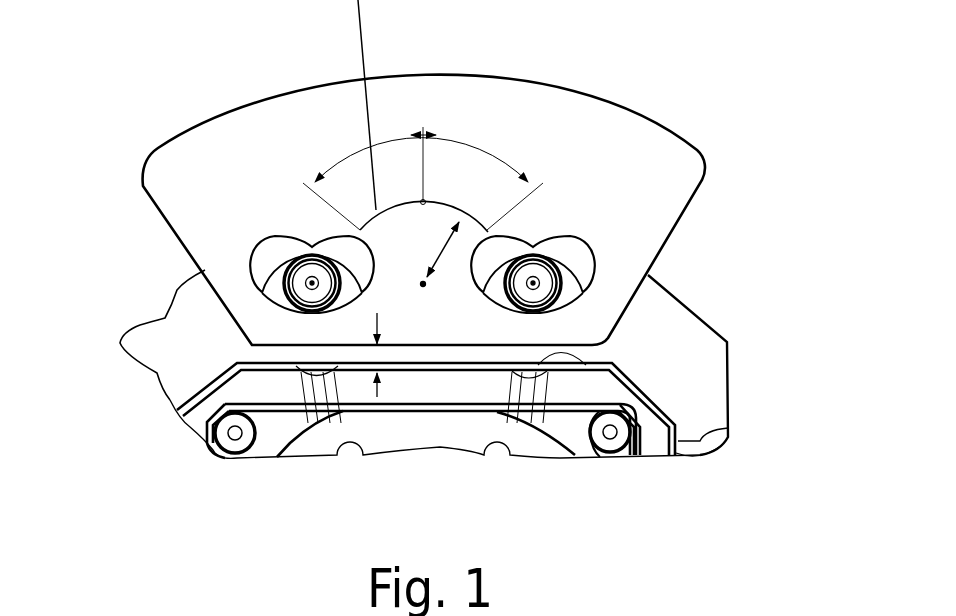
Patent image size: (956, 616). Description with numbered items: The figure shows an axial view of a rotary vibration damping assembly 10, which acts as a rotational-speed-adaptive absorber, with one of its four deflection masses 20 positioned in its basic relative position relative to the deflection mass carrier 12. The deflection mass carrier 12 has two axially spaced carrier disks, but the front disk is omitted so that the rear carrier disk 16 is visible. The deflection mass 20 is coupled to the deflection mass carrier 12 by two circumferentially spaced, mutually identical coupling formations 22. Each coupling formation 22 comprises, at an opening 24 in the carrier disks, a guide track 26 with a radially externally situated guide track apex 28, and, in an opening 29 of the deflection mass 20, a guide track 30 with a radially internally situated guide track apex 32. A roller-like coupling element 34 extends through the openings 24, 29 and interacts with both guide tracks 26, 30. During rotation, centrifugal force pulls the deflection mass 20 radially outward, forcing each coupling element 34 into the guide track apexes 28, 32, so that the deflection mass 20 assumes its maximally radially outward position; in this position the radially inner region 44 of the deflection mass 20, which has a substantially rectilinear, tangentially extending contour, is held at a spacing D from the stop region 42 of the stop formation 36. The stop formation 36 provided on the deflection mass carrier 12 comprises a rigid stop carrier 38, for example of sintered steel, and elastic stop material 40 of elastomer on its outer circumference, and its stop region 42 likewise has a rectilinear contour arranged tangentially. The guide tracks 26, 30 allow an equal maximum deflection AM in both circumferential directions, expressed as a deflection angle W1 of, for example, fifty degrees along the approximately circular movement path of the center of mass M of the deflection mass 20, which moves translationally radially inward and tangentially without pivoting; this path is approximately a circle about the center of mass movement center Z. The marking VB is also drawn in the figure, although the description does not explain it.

The rotary vibration damping assembly 10 is at (725, 88).
The deflection mass carrier 12 is at (733, 401).
The carrier disk 16 is at (180, 370).
The deflection mass 20 is at (180, 133).
The coupling formation 22 is at (241, 293).
The opening 24 is at (522, 226).
The guide track 26 is at (590, 335).
The guide track apex 28 is at (280, 259).
The opening 29 is at (577, 253).
The guide track 30 is at (426, 436).
The guide track apex 32 is at (310, 314).
The coupling element 34 is at (305, 298).
The stop formation 36 is at (659, 384).
The stop carrier 38 is at (645, 440).
The stop material 40 is at (705, 440).
The stop region 42 is at (576, 352).
The radially inner region 44 is at (283, 348).
The spacing D is at (378, 353).
The center of mass M is at (420, 202).
The center of mass movement center Z is at (424, 287).
The deflection angle W1 is at (470, 18).
The maximum deflection AM is at (445, 203).
The direction vector VB is at (462, 482).